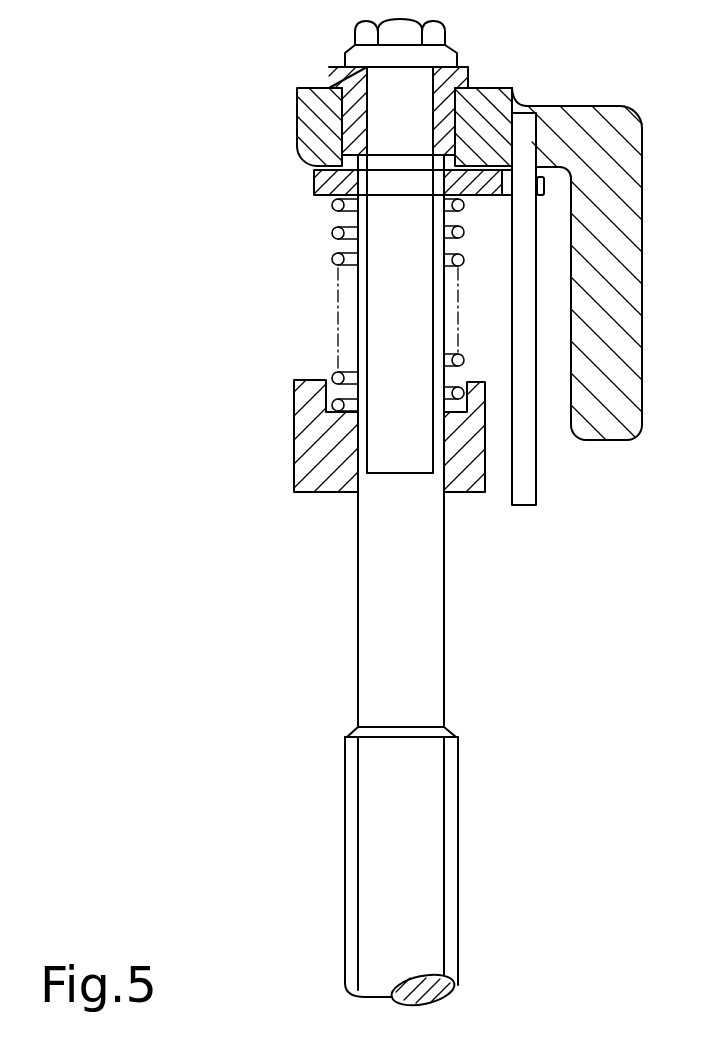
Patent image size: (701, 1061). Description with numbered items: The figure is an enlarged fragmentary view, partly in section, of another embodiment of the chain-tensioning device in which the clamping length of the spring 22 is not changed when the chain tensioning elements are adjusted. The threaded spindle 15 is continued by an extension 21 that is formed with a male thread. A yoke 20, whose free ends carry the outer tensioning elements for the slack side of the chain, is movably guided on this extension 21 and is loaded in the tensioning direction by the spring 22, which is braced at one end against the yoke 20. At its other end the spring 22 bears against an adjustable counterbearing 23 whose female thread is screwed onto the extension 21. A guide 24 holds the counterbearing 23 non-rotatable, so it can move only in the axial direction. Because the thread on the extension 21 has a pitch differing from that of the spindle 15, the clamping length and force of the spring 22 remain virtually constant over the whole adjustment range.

The threaded spindle 15 is at (436, 905).
The yoke 20 is at (300, 438).
The extension of the spindle 21 is at (363, 608).
The spring 22 is at (330, 262).
The adjustable counterbearing 23 is at (313, 175).
The guide 24 is at (530, 470).